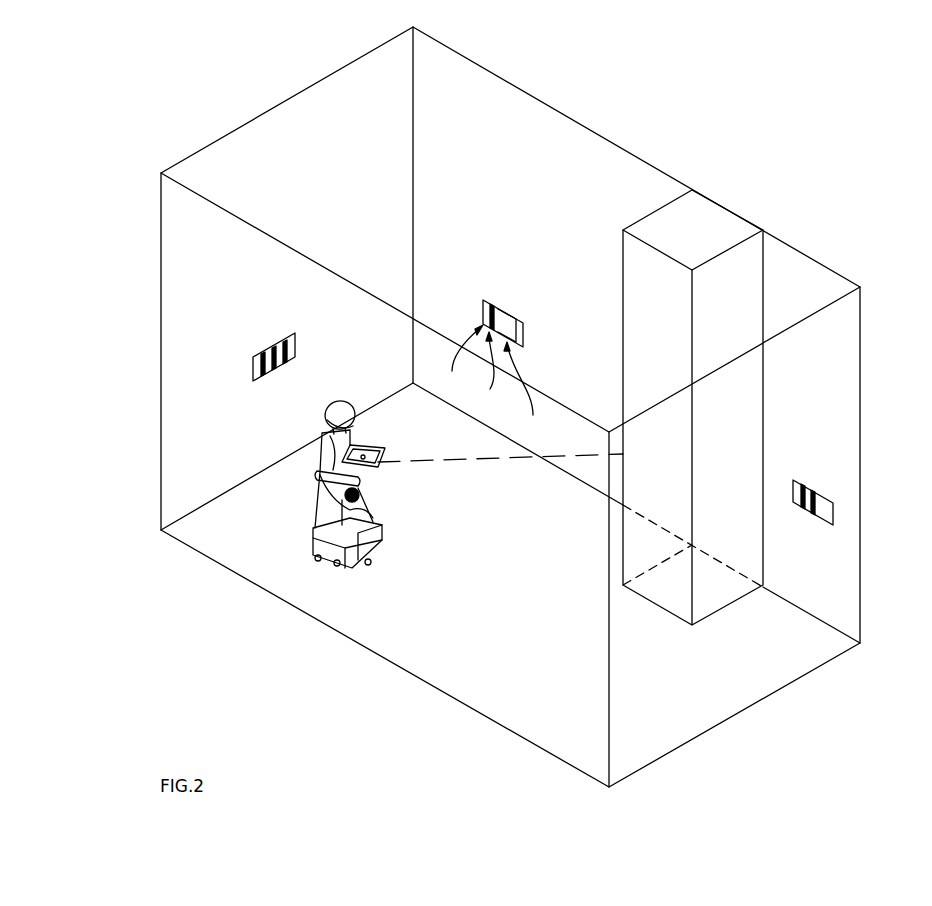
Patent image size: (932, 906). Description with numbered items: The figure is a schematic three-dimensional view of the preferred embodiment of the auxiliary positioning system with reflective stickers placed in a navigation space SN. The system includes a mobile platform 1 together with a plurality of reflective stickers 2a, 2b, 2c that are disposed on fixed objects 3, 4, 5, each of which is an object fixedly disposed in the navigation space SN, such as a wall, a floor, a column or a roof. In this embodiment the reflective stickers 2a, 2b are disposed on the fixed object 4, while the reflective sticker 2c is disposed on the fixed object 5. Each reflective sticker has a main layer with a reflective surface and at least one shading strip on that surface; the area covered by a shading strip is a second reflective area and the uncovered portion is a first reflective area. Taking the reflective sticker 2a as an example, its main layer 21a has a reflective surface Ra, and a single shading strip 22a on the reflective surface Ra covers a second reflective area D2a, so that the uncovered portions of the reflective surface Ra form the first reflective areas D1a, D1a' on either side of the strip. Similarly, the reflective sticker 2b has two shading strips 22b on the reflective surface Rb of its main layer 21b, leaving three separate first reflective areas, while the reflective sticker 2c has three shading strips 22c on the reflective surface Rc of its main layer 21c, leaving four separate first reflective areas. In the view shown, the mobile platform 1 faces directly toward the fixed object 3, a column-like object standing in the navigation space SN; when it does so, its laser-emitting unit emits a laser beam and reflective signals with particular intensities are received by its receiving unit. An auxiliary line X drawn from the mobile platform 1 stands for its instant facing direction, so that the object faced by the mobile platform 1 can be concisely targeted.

The mobile platform 1 is at (322, 560).
The reflective sticker 2a is at (519, 276).
The reflective sticker 2b is at (840, 455).
The reflective sticker 2c is at (244, 309).
The main layer 21a is at (478, 243).
The shading strip 22a is at (491, 305).
The main layer 21b is at (835, 473).
The shading strips 22b is at (803, 484).
The main layer 21c is at (273, 323).
The shading strips 22c is at (262, 351).
The fixed object 3 is at (718, 219).
The fixed object 4 is at (598, 149).
The fixed object 5 is at (262, 121).
The navigation space SN is at (520, 146).
The reflective surface Ra is at (523, 335).
The reflective surface Rb is at (833, 511).
The reflective surface Rc is at (253, 370).
The first reflective area D1a is at (529, 389).
The first reflective area D1a' is at (459, 358).
The second reflective area D2a is at (493, 371).
The auxiliary line X is at (462, 465).